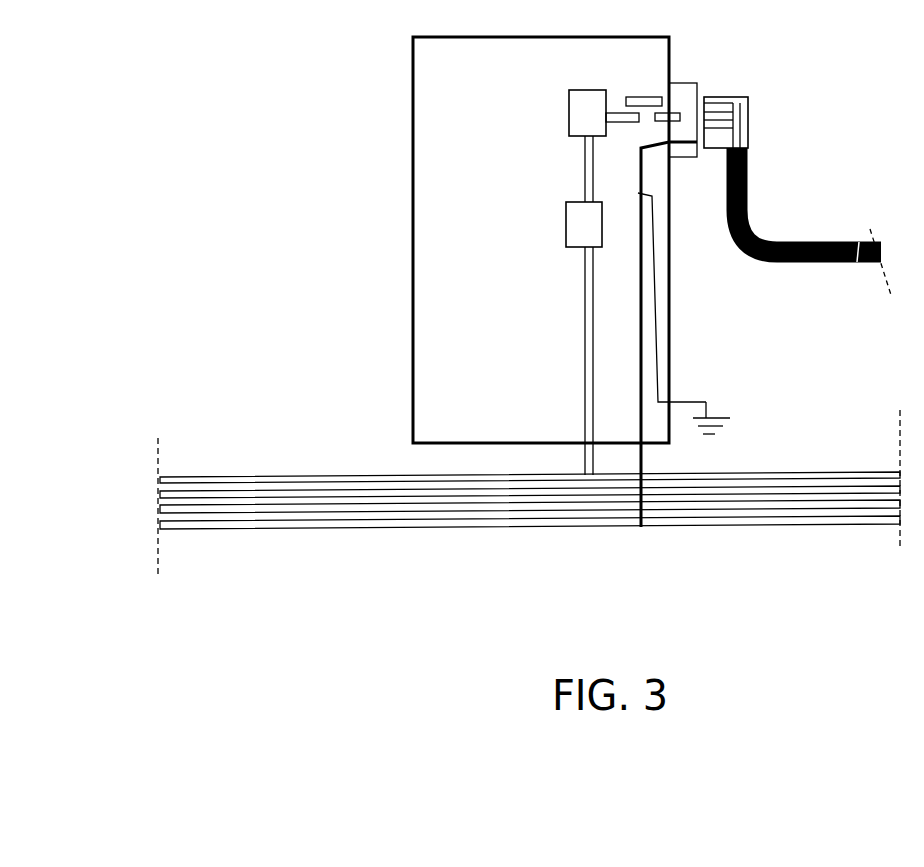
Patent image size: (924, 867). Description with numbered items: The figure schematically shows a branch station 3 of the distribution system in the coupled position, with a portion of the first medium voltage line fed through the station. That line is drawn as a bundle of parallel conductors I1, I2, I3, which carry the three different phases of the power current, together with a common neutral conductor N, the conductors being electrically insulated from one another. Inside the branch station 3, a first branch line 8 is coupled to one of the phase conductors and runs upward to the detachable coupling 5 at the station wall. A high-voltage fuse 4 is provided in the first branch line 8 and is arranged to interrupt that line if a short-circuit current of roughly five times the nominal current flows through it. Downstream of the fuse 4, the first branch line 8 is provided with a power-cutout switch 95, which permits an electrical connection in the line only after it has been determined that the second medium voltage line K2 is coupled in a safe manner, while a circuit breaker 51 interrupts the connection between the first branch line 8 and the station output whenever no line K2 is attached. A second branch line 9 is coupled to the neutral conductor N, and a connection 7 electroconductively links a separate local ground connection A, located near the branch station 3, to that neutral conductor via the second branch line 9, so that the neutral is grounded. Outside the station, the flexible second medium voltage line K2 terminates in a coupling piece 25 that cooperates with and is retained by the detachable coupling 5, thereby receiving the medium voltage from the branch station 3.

The branch station 3 is at (372, 141).
The power-cutout switch 95 is at (580, 101).
The circuit breaker 51 is at (658, 78).
The detachable coupling 5 is at (718, 80).
The coupling piece 25 is at (749, 124).
The second medium voltage line K2 is at (826, 242).
The high-voltage fuse 4 is at (572, 221).
The first branch line 8 is at (588, 297).
The connection 7 is at (660, 311).
The second branch line 9 is at (640, 368).
The ground connection A is at (730, 409).
The conductor I1 is at (170, 480).
The conductor I2 is at (167, 497).
The conductor I3 is at (167, 509).
The neutral conductor N is at (223, 528).